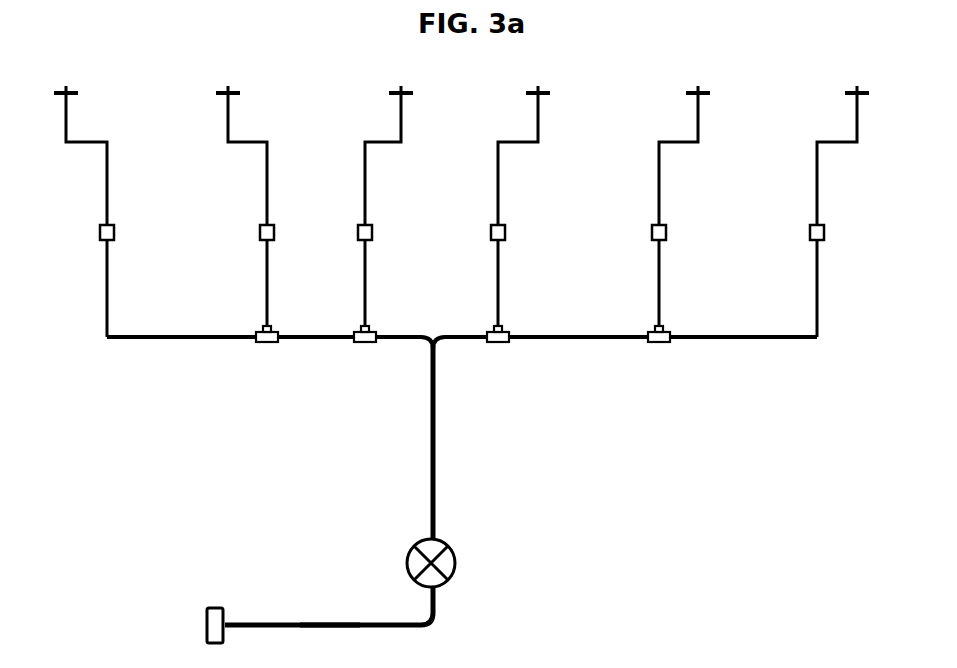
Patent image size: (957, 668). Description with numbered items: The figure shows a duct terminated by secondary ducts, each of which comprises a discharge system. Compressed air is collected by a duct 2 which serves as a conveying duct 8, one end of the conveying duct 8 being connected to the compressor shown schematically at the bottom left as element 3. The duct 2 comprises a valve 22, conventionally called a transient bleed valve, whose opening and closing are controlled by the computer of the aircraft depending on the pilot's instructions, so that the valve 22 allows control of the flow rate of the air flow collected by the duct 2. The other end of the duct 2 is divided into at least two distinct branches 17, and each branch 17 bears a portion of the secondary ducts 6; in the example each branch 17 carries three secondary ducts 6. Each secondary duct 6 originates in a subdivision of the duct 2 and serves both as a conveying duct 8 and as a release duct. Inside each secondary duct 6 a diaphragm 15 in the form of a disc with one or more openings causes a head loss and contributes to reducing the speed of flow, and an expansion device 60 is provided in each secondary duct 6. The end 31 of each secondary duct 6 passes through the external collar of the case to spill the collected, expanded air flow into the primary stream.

The end of the secondary ducts 31 is at (77, 80).
The diaphragm 15 is at (462, 238).
The expansion device 60 is at (124, 233).
The secondary duct 6 is at (461, 359).
The conveying duct 8 is at (461, 359).
The branch 17 is at (197, 368).
The valve 22 is at (464, 563).
The duct 2 is at (432, 622).
The fluid source 3 is at (198, 627).